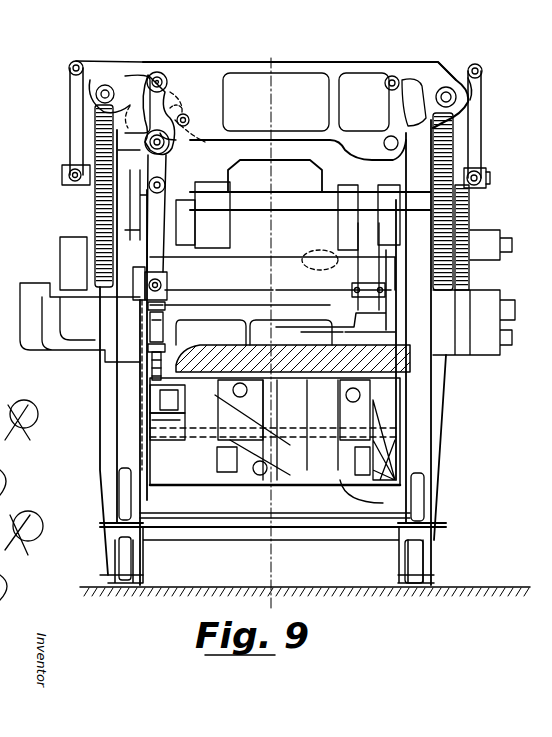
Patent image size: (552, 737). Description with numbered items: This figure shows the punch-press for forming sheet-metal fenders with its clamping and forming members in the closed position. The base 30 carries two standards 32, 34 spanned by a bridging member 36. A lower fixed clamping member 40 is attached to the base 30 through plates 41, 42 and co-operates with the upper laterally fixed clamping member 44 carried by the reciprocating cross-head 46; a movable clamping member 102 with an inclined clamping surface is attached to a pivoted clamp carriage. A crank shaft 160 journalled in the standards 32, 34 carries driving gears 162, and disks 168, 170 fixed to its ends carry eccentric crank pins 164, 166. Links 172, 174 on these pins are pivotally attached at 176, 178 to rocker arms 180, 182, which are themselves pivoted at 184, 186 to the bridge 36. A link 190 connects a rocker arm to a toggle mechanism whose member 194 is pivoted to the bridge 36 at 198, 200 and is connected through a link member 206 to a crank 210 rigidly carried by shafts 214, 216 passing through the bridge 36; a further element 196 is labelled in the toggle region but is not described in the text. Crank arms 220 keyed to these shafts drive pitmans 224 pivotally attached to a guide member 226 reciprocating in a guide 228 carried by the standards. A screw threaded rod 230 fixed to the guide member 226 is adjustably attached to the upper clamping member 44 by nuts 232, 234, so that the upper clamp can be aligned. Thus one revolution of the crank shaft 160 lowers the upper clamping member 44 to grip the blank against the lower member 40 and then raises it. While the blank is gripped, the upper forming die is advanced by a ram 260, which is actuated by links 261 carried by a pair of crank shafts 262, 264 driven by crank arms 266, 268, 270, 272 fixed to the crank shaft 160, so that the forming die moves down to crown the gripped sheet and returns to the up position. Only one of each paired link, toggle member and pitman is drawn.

The base 30 is at (379, 568).
The standard 32 is at (125, 330).
The standard 34 is at (120, 442).
The bridging member 36 is at (310, 68).
The lower fixed clamping member 40 is at (408, 498).
The plate 41 is at (323, 507).
The plate 42 is at (358, 522).
The upper laterally fixed clamping member 44 is at (180, 313).
The reciprocating cross-head 46 is at (380, 352).
The movable clamping member 102 is at (185, 410).
The crank shaft 160 is at (305, 210).
The driving gear 162 is at (448, 143).
The eccentric crank pin 164 is at (483, 178).
The eccentric crank pin 166 is at (66, 177).
The disk 168 is at (466, 203).
The disk 170 is at (155, 230).
The link 172 is at (482, 118).
The link 174 is at (70, 125).
The pivot 176 is at (481, 69).
The pivot 178 is at (68, 69).
The rocker arm 180 is at (462, 78).
The rocker arm 182 is at (97, 62).
The pivot 184 is at (441, 92).
The pivot 186 is at (108, 89).
The link 190 is at (112, 132).
The toggle member 194 is at (172, 105).
The pin 196 is at (188, 118).
The pivot 198 is at (160, 73).
The pivot 200 is at (390, 76).
The link member 206 is at (175, 112).
The crank 210 is at (205, 142).
The shaft 214 is at (388, 140).
The shaft 216 is at (146, 143).
The crank arm 220 is at (147, 198).
The pitman 224 is at (140, 232).
The guide member 226 is at (143, 287).
The guide 228 is at (138, 335).
The screw threaded rod 230 is at (167, 305).
The nut 232 is at (163, 315).
The nut 234 is at (168, 364).
The ram 260 is at (296, 327).
The link 261 is at (378, 255).
The crank shaft 262 is at (320, 260).
The crank shaft 264 is at (185, 247).
The crank arm 266 is at (360, 197).
The crank arm 268 is at (386, 197).
The crank arm 270 is at (166, 180).
The crank arm 272 is at (193, 182).